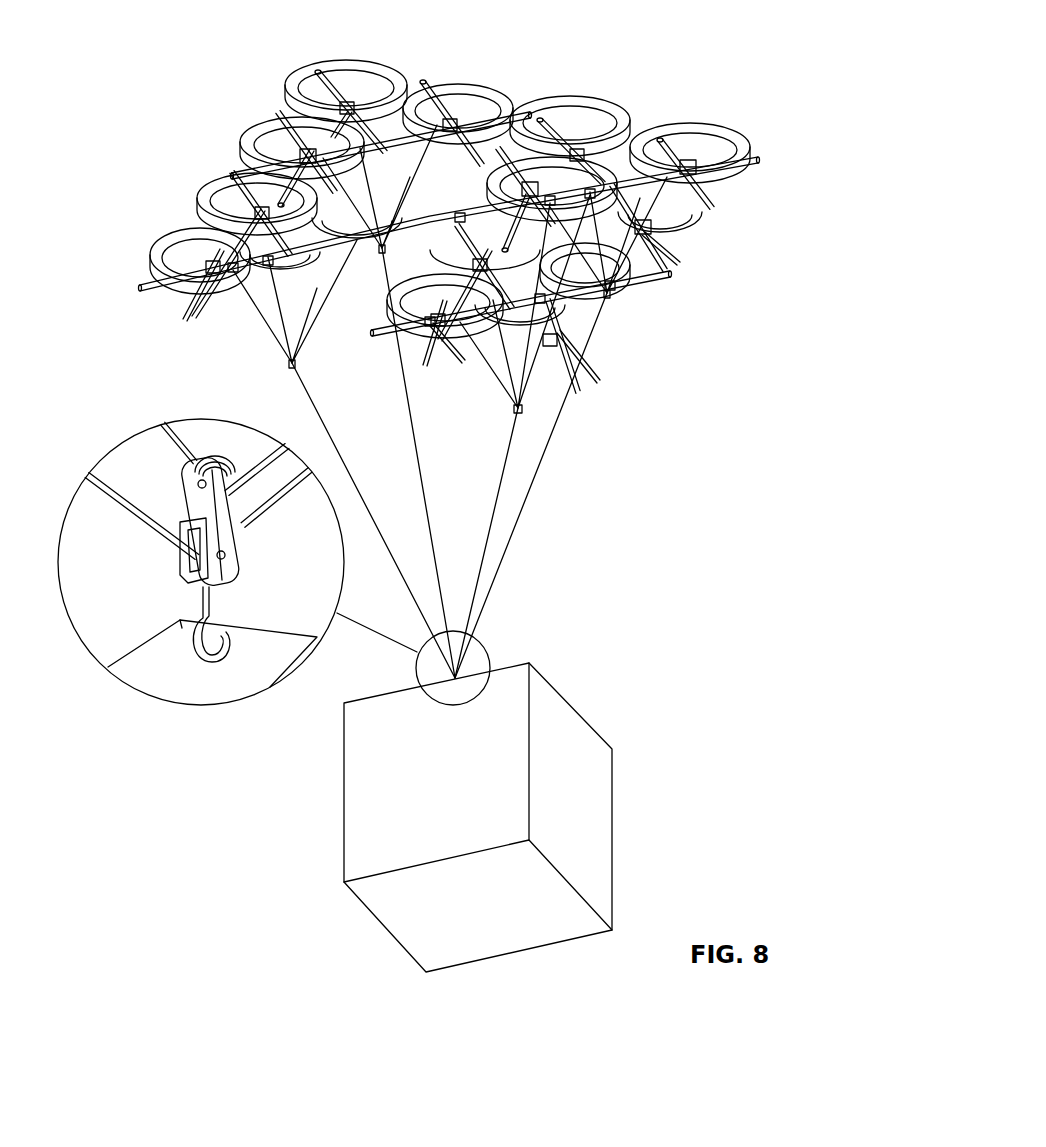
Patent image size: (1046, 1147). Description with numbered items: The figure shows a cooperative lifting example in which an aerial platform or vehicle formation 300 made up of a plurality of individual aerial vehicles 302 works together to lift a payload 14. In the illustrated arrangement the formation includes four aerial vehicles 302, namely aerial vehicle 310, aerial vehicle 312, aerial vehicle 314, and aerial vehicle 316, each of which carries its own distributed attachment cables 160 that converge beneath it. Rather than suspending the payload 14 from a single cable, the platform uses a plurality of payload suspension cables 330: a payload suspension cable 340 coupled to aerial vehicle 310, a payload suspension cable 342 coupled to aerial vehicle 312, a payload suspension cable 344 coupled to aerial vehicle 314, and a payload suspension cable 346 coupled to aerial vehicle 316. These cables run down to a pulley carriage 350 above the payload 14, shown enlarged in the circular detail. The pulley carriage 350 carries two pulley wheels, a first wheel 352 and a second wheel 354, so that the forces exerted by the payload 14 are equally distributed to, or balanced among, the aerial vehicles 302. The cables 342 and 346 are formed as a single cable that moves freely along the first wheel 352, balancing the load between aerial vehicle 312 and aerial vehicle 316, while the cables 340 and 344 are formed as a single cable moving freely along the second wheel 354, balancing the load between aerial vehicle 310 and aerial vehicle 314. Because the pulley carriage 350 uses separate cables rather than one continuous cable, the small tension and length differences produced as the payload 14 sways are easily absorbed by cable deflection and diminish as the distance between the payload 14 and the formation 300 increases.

The aerial platform 300 is at (756, 50).
The aerial vehicles 302 is at (431, 64).
The aerial vehicle 310 is at (745, 140).
The aerial vehicle 312 is at (640, 293).
The aerial vehicle 314 is at (150, 280).
The aerial vehicle 316 is at (250, 133).
The payload suspension cables 330 is at (374, 401).
The payload suspension cable 340 is at (533, 493).
The payload suspension cable 342 is at (507, 462).
The payload suspension cable 344 is at (320, 418).
The payload suspension cable 346 is at (415, 430).
The pulley carriage 350 is at (298, 544).
The first wheel 352 is at (220, 442).
The second wheel 354 is at (240, 573).
The distributed attachment cables 160 is at (540, 402).
The payload 14 is at (610, 800).